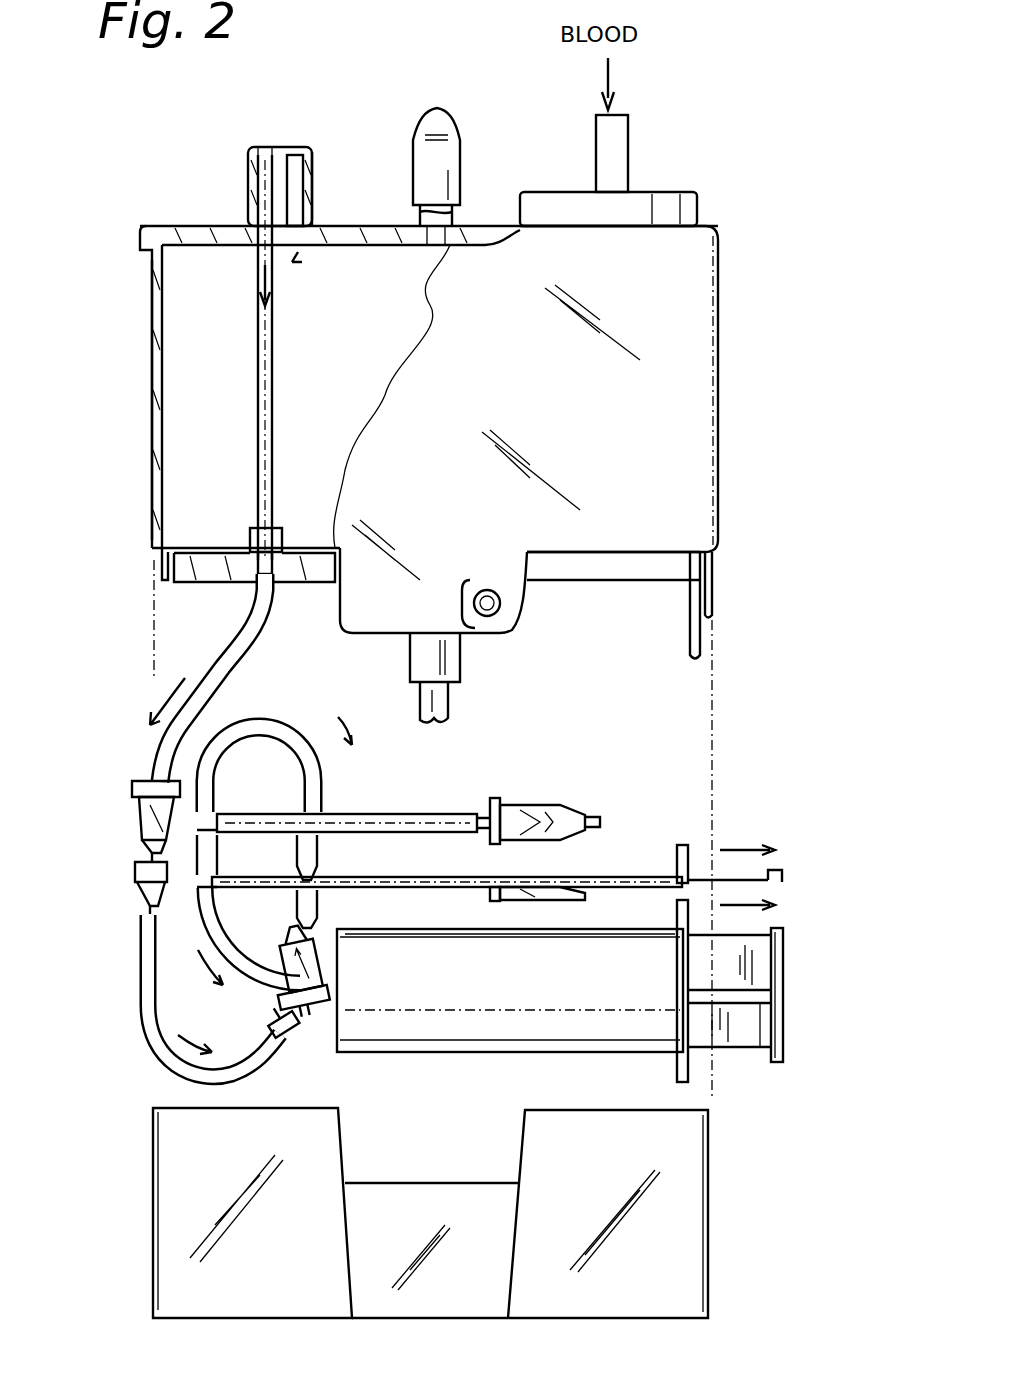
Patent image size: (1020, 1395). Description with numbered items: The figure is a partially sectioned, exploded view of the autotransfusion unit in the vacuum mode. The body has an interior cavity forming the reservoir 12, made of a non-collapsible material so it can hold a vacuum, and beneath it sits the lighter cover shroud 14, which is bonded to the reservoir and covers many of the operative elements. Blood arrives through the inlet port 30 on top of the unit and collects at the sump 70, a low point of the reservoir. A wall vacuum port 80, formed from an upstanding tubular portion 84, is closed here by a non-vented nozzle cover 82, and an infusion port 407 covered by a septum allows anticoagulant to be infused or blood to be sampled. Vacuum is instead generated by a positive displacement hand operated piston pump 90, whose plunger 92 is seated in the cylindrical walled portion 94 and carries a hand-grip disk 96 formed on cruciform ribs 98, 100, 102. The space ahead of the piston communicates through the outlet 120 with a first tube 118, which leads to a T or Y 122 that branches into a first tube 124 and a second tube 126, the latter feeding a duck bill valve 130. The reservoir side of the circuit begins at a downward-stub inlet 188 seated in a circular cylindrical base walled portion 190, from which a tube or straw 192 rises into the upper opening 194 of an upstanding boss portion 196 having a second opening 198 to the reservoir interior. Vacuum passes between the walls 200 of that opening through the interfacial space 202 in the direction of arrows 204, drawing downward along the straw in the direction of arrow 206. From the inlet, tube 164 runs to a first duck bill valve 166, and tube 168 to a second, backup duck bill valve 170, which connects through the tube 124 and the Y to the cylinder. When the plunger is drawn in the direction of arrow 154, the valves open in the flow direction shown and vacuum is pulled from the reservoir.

The reservoir 12 is at (150, 433).
The cover shroud 14 is at (700, 1185).
The inlet port 30 is at (628, 160).
The sump 70 is at (388, 640).
The port 80 is at (445, 235).
The nozzle cover 82 is at (460, 170).
The upstanding tubular portion 84 is at (455, 218).
The positive displacement hand operated piston pump 90 is at (612, 912).
The plunger 92 is at (765, 1064).
The cylindrical walled portion 94 is at (445, 1050).
The disk 96 is at (785, 970).
The cruciform rib 98 is at (715, 960).
The cruciform rib 100 is at (800, 895).
The cruciform rib 102 is at (770, 1032).
The first tube 118 is at (210, 935).
The outlet 120 is at (305, 1035).
The T or Y 122 is at (155, 826).
The first tube 124 is at (290, 730).
The second tube 126 is at (378, 815).
The duck bill valve 130 is at (540, 805).
The arrow 154 is at (740, 850).
The tube 164 is at (225, 660).
The first duck bill valve 166 is at (135, 805).
The tube 168 is at (148, 1025).
The second duck bill valve 170 is at (328, 968).
The inlet 188 is at (240, 560).
The circular cylindrical base walled portion 190 is at (280, 535).
The tube or straw 192 is at (270, 418).
The upper opening 194 is at (265, 150).
The upstanding boss portion 196 is at (308, 152).
The second opening 198 is at (300, 200).
The walls 200 is at (258, 172).
The interfacial space 202 is at (256, 210).
The arrows 204 is at (236, 258).
The arrow 206 is at (272, 278).
The infusion port 407 is at (495, 610).